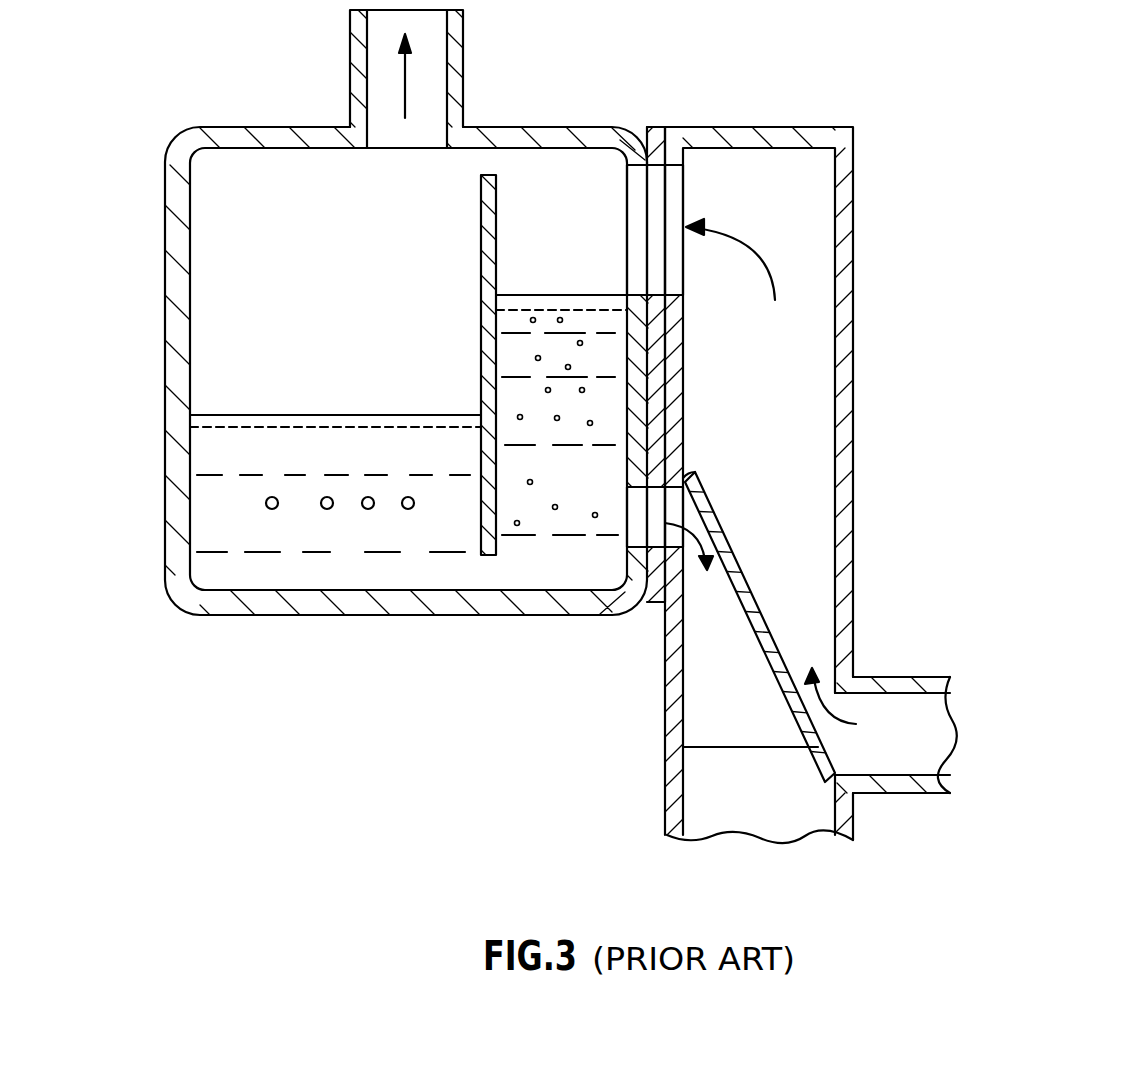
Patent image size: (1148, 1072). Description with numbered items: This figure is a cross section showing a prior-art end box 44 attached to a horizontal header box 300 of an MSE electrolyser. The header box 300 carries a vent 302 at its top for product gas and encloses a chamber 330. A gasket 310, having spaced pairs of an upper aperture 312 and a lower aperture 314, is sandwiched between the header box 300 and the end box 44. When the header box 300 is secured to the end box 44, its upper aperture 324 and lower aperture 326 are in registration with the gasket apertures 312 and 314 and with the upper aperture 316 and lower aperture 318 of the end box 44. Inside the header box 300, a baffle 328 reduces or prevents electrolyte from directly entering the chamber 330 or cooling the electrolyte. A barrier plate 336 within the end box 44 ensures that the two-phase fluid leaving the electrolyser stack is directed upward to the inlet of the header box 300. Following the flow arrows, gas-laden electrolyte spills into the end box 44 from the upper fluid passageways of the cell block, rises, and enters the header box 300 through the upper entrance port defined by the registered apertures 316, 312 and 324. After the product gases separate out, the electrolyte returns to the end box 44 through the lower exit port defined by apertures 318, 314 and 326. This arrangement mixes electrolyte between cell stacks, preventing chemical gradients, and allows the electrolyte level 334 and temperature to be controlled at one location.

The end box 44 is at (733, 135).
The header box 300 is at (172, 314).
The vent 302 is at (350, 53).
The gasket 310 is at (657, 130).
The upper aperture of gasket 312 is at (640, 205).
The lower aperture of gasket 314 is at (668, 528).
The upper aperture of end box 316 is at (683, 196).
The lower aperture of end box 318 is at (677, 503).
The upper aperture of header box 324 is at (627, 167).
The lower aperture of header box 326 is at (645, 540).
The baffle 328 is at (481, 220).
The chamber 330 is at (385, 326).
The electrolyte level 334 is at (738, 750).
The barrier plate 336 is at (748, 562).